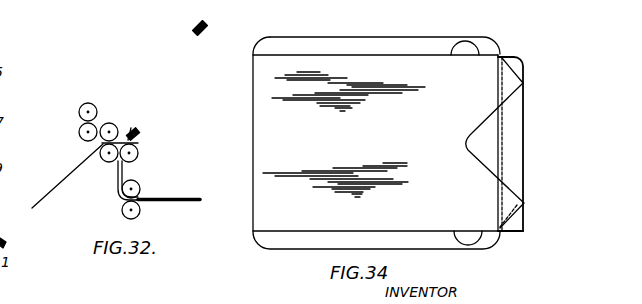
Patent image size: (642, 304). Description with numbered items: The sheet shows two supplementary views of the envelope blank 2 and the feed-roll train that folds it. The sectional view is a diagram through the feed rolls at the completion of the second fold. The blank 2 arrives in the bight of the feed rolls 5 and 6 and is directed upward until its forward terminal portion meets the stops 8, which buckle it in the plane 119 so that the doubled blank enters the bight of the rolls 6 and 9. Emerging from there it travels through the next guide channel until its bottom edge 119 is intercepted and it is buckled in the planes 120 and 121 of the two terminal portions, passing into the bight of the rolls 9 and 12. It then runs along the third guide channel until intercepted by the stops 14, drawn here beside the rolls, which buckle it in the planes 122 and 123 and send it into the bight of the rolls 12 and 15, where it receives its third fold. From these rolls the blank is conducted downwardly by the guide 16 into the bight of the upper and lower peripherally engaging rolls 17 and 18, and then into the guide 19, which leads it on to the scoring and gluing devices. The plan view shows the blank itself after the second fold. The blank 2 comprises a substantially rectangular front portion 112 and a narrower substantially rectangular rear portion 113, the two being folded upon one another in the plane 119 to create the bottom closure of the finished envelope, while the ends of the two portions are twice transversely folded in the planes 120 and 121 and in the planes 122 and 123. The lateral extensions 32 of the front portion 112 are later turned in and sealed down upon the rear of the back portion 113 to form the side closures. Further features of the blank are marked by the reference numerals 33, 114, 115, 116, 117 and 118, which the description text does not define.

In FIG. 32, the envelope blank 2 is at (85, 175).
In FIG. 34, the envelope blank 2 is at (361, 143).
In FIG. 32, the feed roll 5 is at (88, 98).
In FIG. 32, the feed roll 6 is at (72, 132).
In FIG. 32, the stops 8 is at (217, 22).
In FIG. 32, the feed roll 9 is at (110, 121).
In FIG. 32, the feed roll 12 is at (101, 167).
In FIG. 32, the stops 14 is at (149, 124).
In FIG. 32, the feed roll 15 is at (151, 149).
In FIG. 32, the guide 16 is at (116, 185).
In FIG. 32, the upper roll 17 is at (147, 188).
In FIG. 32, the lower roll 18 is at (149, 212).
In FIG. 32, the guide 19 is at (175, 189).
In FIG. 34, the lateral extensions 32 is at (292, 146).
In FIG. 34, the semicircular notch 33 is at (464, 145).
In FIG. 32, the substantially rectangular portion 112 is at (71, 200).
In FIG. 34, the substantially rectangular portion 112 is at (477, 143).
In FIG. 32, the narrower substantially rectangular portion 113 is at (34, 176).
In FIG. 34, the narrower substantially rectangular portion 113 is at (344, 134).
In FIG. 34, the flap portion 114 is at (484, 143).
In FIG. 34, the flap portion 115 is at (485, 179).
In FIG. 34, the corner fold 116 is at (512, 208).
In FIG. 34, the edge 117 is at (523, 39).
In FIG. 34, the edge 118 is at (504, 31).
In FIG. 32, the fold plane 119 is at (26, 199).
In FIG. 34, the fold plane 119 is at (253, 137).
In FIG. 32, the fold plane 120 is at (162, 105).
In FIG. 34, the fold plane 120 is at (528, 228).
In FIG. 32, the fold plane 121 is at (129, 134).
In FIG. 34, the fold plane 121 is at (534, 50).
In FIG. 34, the fold plane 122 is at (474, 105).
In FIG. 34, the fold plane 123 is at (479, 85).